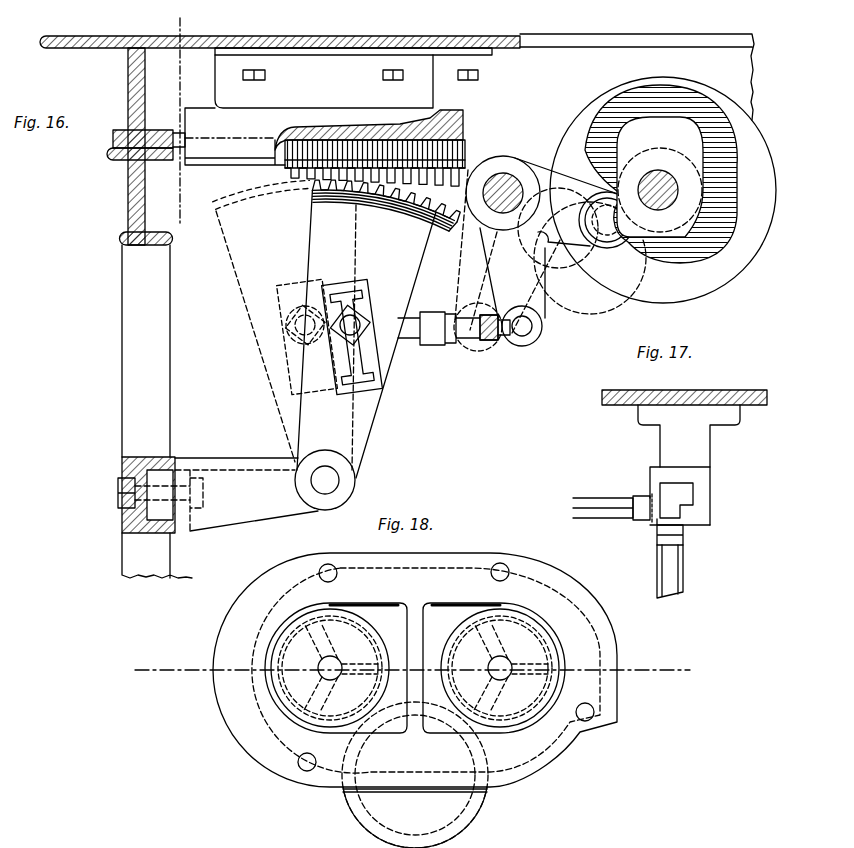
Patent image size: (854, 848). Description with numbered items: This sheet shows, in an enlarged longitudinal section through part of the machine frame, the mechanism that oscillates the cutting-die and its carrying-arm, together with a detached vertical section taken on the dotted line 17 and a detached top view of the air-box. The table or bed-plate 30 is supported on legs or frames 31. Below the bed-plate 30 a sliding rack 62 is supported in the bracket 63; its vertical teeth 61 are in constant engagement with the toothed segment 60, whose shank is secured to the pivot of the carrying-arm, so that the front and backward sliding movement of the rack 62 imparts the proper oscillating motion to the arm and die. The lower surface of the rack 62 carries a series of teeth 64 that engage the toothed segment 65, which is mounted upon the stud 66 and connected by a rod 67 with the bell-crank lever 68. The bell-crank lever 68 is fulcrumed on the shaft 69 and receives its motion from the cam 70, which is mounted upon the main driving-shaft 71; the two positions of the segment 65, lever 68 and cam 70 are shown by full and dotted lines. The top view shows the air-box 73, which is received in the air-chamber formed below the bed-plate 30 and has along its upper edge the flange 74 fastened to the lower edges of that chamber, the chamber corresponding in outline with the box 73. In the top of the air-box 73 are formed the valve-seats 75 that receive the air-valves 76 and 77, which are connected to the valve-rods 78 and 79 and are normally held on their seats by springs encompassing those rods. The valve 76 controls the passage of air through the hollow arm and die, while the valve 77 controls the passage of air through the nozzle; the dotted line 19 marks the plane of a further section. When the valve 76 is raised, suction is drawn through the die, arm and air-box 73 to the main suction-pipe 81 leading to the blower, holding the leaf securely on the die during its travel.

In FIG. 16, the section line 17 is at (187, 128).
In FIG. 18, the section line 19 is at (412, 671).
In FIG. 16, the table or bed-plate 30 is at (486, 36).
In FIG. 17, the table or bed-plate 30 is at (752, 388).
In FIG. 16, the legs or frames 31 is at (157, 411).
In FIG. 17, the toothed segment 60 is at (604, 503).
In FIG. 17, the vertical teeth 61 is at (642, 522).
In FIG. 16, the sliding rack 62 is at (492, 164).
In FIG. 17, the sliding rack 62 is at (695, 499).
In FIG. 16, the bracket 63 is at (331, 110).
In FIG. 17, the bracket 63 is at (706, 460).
In FIG. 16, the series of teeth 64 is at (370, 177).
In FIG. 17, the series of teeth 64 is at (686, 533).
In FIG. 16, the toothed segment 65 is at (355, 324).
In FIG. 17, the toothed segment 65 is at (672, 578).
In FIG. 16, the stud 66 is at (330, 481).
In FIG. 16, the rod 67 is at (408, 338).
In FIG. 16, the bell-crank lever 68 is at (531, 293).
In FIG. 16, the shaft 69 is at (506, 185).
In FIG. 16, the cam 70 is at (648, 86).
In FIG. 16, the main driving-shaft 71 is at (659, 172).
In FIG. 18, the air-box 73 is at (415, 633).
In FIG. 18, the flange 74 is at (240, 730).
In FIG. 18, the valve-seats 75 is at (462, 645).
In FIG. 18, the air-valve 76 is at (510, 668).
In FIG. 18, the air-valve 77 is at (342, 697).
In FIG. 18, the valve-rod 78 is at (505, 682).
In FIG. 18, the valve-rod 79 is at (318, 668).
In FIG. 18, the main suction-pipe 81 is at (460, 800).